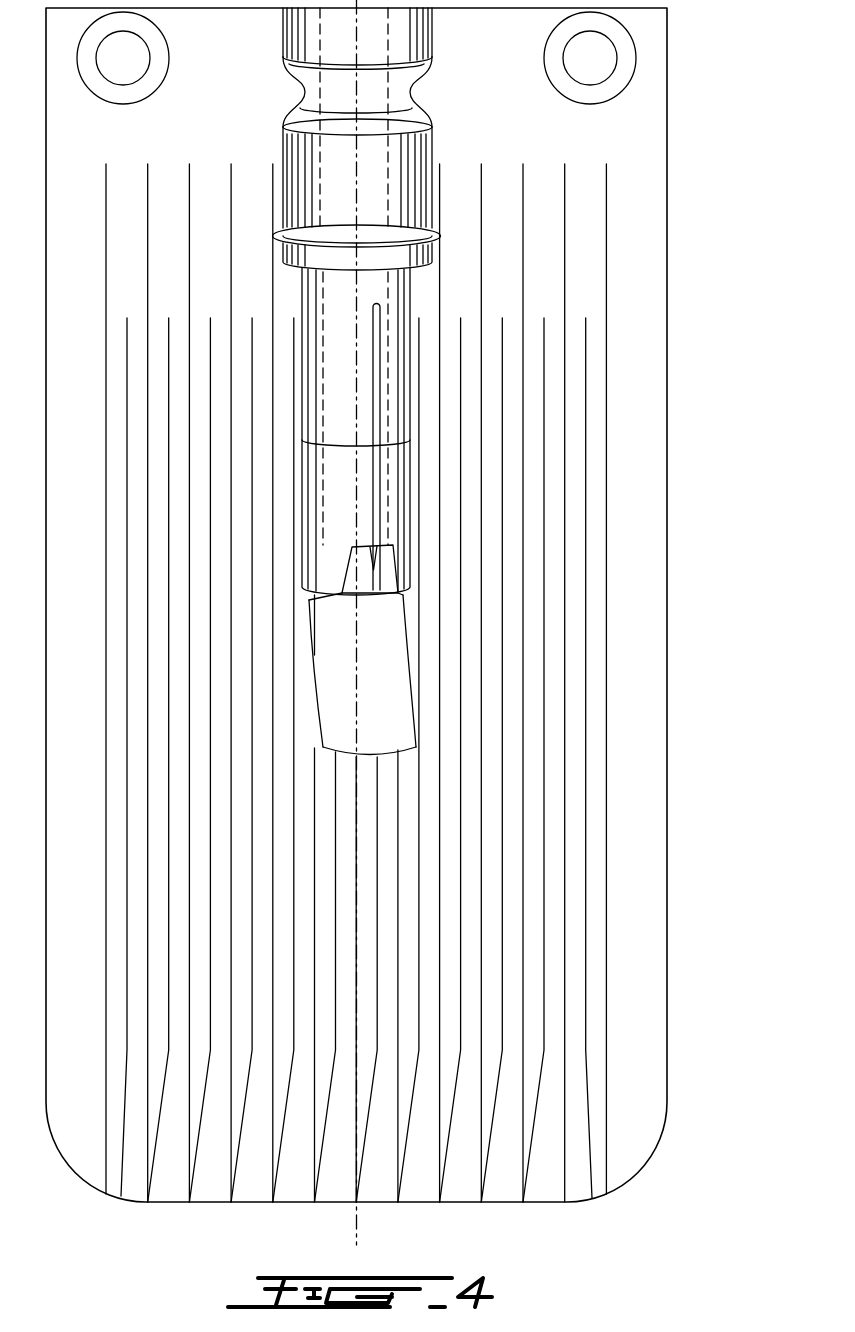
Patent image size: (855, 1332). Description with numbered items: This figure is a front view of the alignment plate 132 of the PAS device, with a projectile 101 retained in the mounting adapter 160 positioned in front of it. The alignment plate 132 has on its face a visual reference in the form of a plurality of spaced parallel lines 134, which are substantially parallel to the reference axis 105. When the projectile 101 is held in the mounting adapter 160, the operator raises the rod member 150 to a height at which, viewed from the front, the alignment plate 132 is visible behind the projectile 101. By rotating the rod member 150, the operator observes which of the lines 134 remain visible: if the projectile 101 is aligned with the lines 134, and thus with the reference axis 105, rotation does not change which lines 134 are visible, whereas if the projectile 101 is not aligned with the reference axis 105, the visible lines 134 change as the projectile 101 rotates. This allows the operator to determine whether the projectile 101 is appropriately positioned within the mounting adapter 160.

The rod member 150 is at (393, 180).
The reference axis 105 is at (357, 363).
The mounting adapter 160 is at (389, 503).
The projectile 101 is at (383, 665).
The alignment plate 132 is at (635, 858).
The spaced parallel lines 134 is at (593, 992).